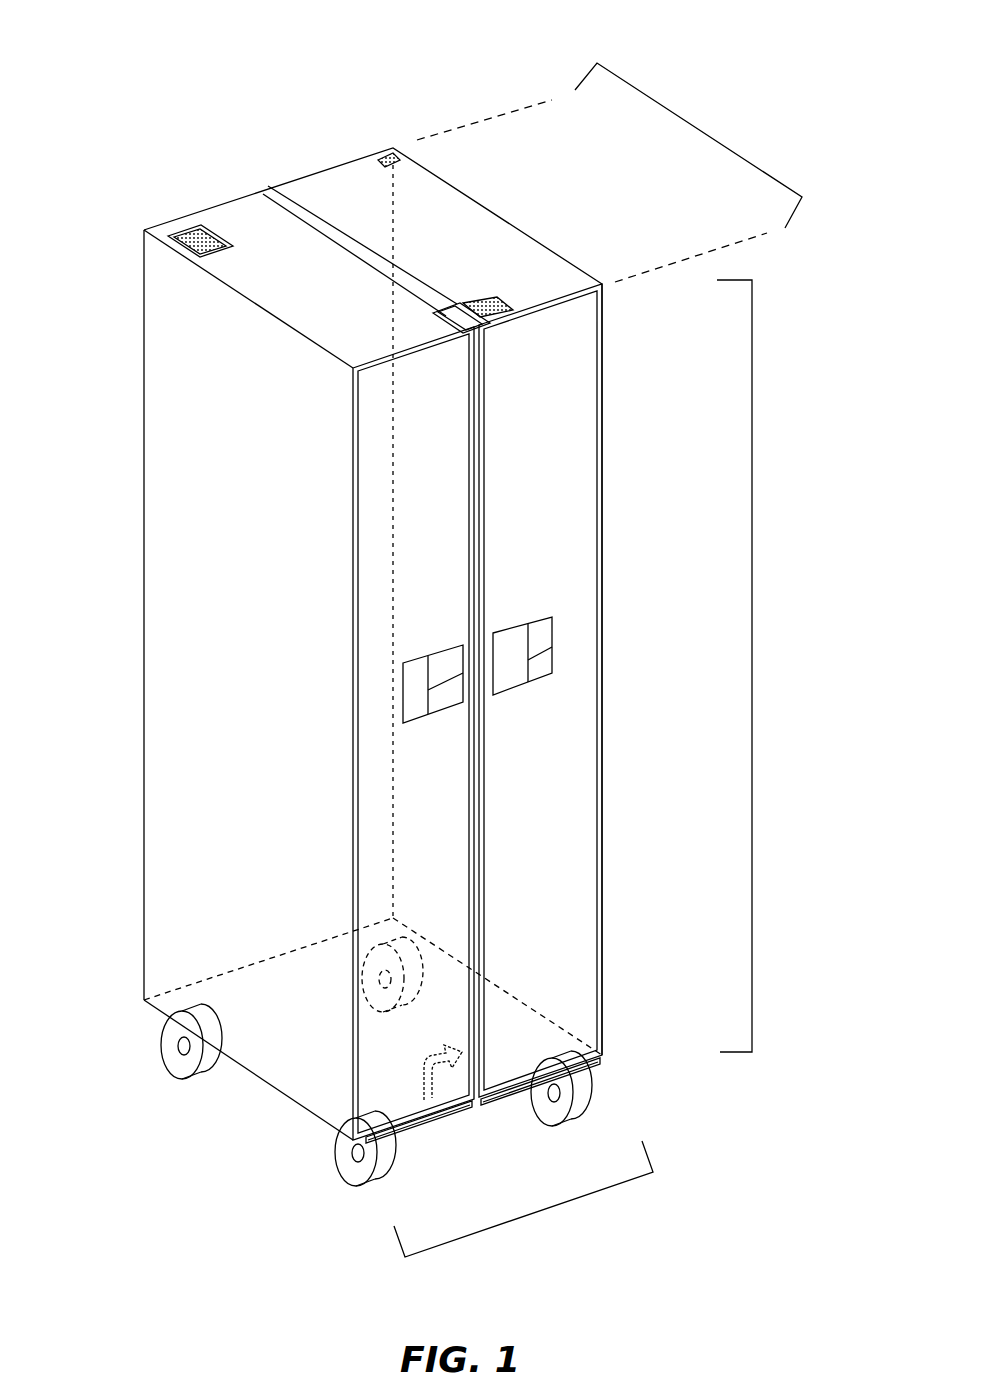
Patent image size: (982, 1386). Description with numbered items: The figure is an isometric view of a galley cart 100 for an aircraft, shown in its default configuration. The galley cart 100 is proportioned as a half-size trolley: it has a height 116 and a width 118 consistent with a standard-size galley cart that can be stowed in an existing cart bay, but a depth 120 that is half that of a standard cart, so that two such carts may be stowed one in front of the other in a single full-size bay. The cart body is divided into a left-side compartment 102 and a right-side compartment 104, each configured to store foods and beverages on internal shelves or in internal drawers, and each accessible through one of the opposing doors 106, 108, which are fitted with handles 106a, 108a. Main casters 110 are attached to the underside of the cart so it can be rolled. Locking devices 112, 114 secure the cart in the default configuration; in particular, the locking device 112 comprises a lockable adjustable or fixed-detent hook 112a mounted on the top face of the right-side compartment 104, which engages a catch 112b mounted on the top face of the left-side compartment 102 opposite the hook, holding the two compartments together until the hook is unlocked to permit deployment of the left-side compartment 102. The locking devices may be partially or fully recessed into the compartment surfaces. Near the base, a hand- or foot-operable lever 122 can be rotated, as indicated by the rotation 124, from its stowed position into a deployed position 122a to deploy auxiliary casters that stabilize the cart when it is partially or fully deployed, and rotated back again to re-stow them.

The galley cart 100 is at (154, 68).
The left-side compartment 102 is at (182, 420).
The right-side compartment 104 is at (355, 185).
The door 106 is at (425, 540).
The handle 106a is at (413, 688).
The door 108 is at (543, 992).
The handle 108a is at (543, 667).
The main casters 110 is at (343, 1165).
The locking device 112 is at (490, 303).
The hook 112a is at (455, 305).
The catch 112b is at (266, 190).
The locking device 114 is at (190, 227).
The height 116 is at (752, 645).
The width 118 is at (580, 1198).
The depth 120 is at (698, 128).
The lever 122 is at (405, 1132).
The deployed position 122a is at (487, 1092).
The rotation 124 is at (438, 1102).